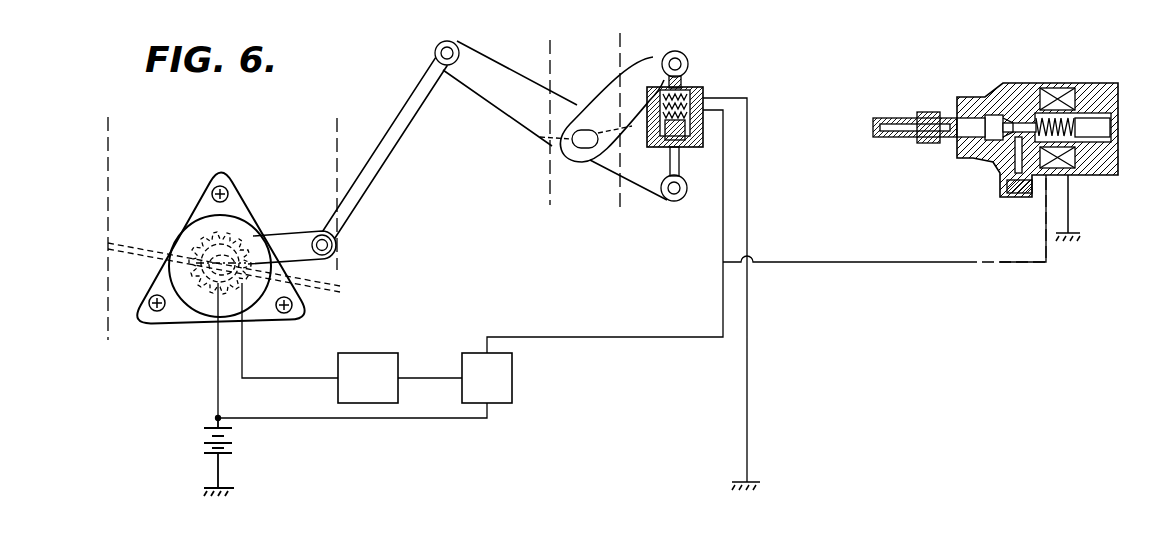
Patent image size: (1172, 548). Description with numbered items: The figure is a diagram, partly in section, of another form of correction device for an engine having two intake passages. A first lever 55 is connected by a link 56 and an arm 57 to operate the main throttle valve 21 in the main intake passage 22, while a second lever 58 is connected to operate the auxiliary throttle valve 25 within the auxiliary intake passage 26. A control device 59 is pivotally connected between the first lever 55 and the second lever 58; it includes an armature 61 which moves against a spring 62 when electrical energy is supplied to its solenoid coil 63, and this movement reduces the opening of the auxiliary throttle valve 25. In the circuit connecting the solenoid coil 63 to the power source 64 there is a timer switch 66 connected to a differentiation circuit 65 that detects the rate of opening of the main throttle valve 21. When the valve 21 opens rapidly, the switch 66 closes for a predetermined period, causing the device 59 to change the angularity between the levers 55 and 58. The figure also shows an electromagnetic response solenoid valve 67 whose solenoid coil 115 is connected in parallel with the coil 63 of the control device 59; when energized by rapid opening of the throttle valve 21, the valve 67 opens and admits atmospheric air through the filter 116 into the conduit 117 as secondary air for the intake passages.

The main throttle valve 21 is at (131, 242).
The main intake passage 22 is at (108, 170).
The auxiliary throttle valve 25 is at (562, 150).
The auxiliary intake passage 26 is at (548, 190).
The first lever 55 is at (498, 76).
The link 56 is at (398, 143).
The arm 57 is at (296, 241).
The second lever 58 is at (653, 60).
The control device 59 is at (707, 82).
The armature 61 is at (687, 152).
The spring 62 is at (686, 86).
The solenoid coil 63 is at (668, 175).
The power source 64 is at (203, 446).
The differentiation circuit 65 is at (374, 392).
The timer switch 66 is at (493, 392).
The solenoid valve 67 is at (1022, 83).
The solenoid coil 115 is at (1063, 90).
The filter 116 is at (1020, 196).
The conduit 117 is at (897, 118).